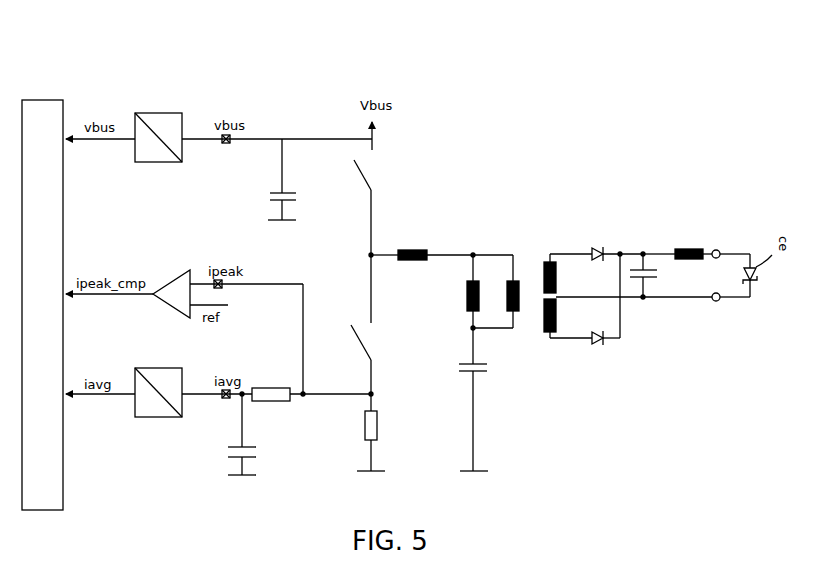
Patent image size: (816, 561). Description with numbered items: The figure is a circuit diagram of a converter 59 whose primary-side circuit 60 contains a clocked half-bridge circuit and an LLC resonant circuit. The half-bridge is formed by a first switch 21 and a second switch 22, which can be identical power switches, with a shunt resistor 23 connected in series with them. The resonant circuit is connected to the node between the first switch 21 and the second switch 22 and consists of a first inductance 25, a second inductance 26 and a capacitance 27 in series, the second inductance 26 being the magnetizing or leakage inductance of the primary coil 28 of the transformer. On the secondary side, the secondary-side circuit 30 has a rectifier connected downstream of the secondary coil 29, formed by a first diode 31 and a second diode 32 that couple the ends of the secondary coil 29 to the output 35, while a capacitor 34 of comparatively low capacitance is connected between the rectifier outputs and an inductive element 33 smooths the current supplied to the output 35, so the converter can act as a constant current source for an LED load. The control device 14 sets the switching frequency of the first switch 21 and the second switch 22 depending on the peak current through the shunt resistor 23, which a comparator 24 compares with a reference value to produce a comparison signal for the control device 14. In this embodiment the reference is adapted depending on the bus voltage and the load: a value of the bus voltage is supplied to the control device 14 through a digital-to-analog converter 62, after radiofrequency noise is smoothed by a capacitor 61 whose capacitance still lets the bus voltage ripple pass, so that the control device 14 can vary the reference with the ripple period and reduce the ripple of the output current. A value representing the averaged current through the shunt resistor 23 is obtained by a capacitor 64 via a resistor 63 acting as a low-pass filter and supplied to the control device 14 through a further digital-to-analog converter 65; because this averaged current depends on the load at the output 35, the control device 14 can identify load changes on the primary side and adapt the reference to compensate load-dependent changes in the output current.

The control device 14 is at (52, 318).
The first switch 21 is at (345, 171).
The second switch 22 is at (345, 330).
The shunt resistor 23 is at (365, 425).
The comparator 24 is at (175, 272).
The first inductance 25 is at (410, 250).
The second inductance 26 is at (466, 297).
The capacitance 27 is at (458, 364).
The primary coil 28 is at (518, 320).
The secondary coil 29 is at (540, 256).
The secondary-side circuit 30 is at (560, 147).
The first diode 31 is at (598, 248).
The second diode 32 is at (598, 345).
The inductive element 33 is at (680, 249).
The capacitor 34 is at (660, 279).
The output 35 is at (716, 250).
The converter 59 is at (74, 62).
The primary-side circuit 60 is at (138, 68).
The capacitor 61 is at (268, 193).
The digital-to-analog converter 62 is at (169, 113).
The resistor 63 is at (282, 402).
The capacitor 64 is at (228, 450).
The further digital-to-analog converter 65 is at (152, 418).